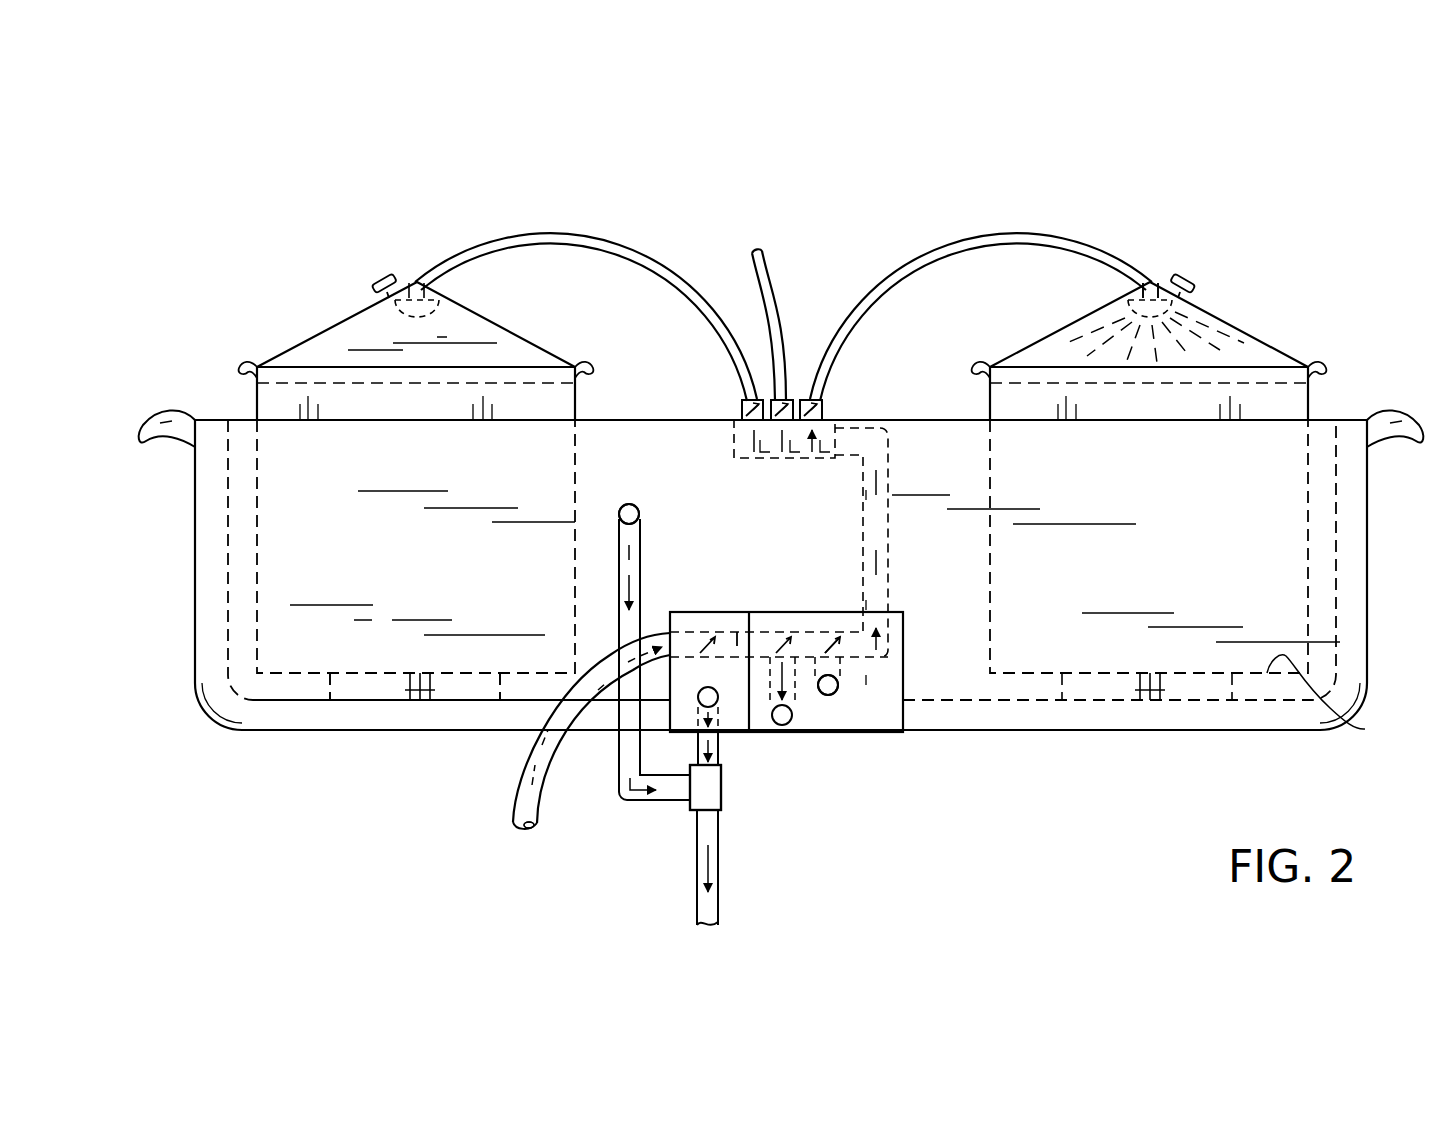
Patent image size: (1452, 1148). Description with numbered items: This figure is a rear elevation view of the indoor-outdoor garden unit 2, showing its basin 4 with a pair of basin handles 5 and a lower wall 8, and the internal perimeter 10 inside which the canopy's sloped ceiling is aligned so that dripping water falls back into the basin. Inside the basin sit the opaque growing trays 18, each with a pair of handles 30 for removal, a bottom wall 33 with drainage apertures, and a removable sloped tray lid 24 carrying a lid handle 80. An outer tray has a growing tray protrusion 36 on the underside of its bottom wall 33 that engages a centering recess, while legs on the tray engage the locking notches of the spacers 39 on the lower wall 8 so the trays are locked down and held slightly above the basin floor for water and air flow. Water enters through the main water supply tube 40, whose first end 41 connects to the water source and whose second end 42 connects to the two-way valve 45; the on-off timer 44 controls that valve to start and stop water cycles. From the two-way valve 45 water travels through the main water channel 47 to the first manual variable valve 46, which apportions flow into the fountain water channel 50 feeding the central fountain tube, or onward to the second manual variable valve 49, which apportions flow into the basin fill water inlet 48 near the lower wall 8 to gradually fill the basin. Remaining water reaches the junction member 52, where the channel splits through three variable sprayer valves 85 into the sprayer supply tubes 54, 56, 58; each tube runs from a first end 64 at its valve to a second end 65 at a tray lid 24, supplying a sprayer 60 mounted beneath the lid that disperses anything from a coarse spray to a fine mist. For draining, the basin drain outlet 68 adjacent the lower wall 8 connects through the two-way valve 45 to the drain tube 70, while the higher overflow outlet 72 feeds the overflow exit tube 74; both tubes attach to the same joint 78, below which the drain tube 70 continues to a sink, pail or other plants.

The indoor-outdoor garden unit 2 is at (1224, 268).
The basin 4 is at (1367, 592).
The basin handles 5 is at (172, 418).
The lower wall 8 is at (1020, 700).
The internal perimeter 10 is at (1340, 487).
The growing trays 18 is at (257, 388).
The tray lid 24 is at (510, 330).
The handles 30 is at (245, 358).
The bottom wall 33 is at (1338, 700).
The growing tray protrusion 36 is at (410, 683).
The spacers 39 is at (438, 690).
The main water supply tube 40 is at (522, 787).
The first end 41 is at (528, 830).
The second end 42 is at (663, 615).
The on-off timer 44 is at (735, 733).
The two-way valve 45 is at (707, 645).
The first manual variable valve 46 is at (785, 654).
The main water channel 47 is at (873, 538).
The basin fill water inlet 48 is at (832, 694).
The second manual variable valve 49 is at (834, 644).
The fountain water channel 50 is at (782, 726).
The junction member 52 is at (818, 458).
The sprayer supply tube 54 is at (988, 230).
The sprayer supply tube 56 is at (773, 292).
The sprayer supply tube 58 is at (540, 230).
The sprayer 60 is at (411, 280).
The first end 64 is at (822, 398).
The second end 65 is at (1140, 283).
The basin drain outlet 68 is at (698, 698).
The drain tube 70 is at (697, 756).
The overflow outlet 72 is at (629, 503).
The overflow exit tube 74 is at (642, 527).
The joint 78 is at (721, 790).
The lid handle 80 is at (1192, 285).
The variable sprayer valve 85 is at (800, 397).